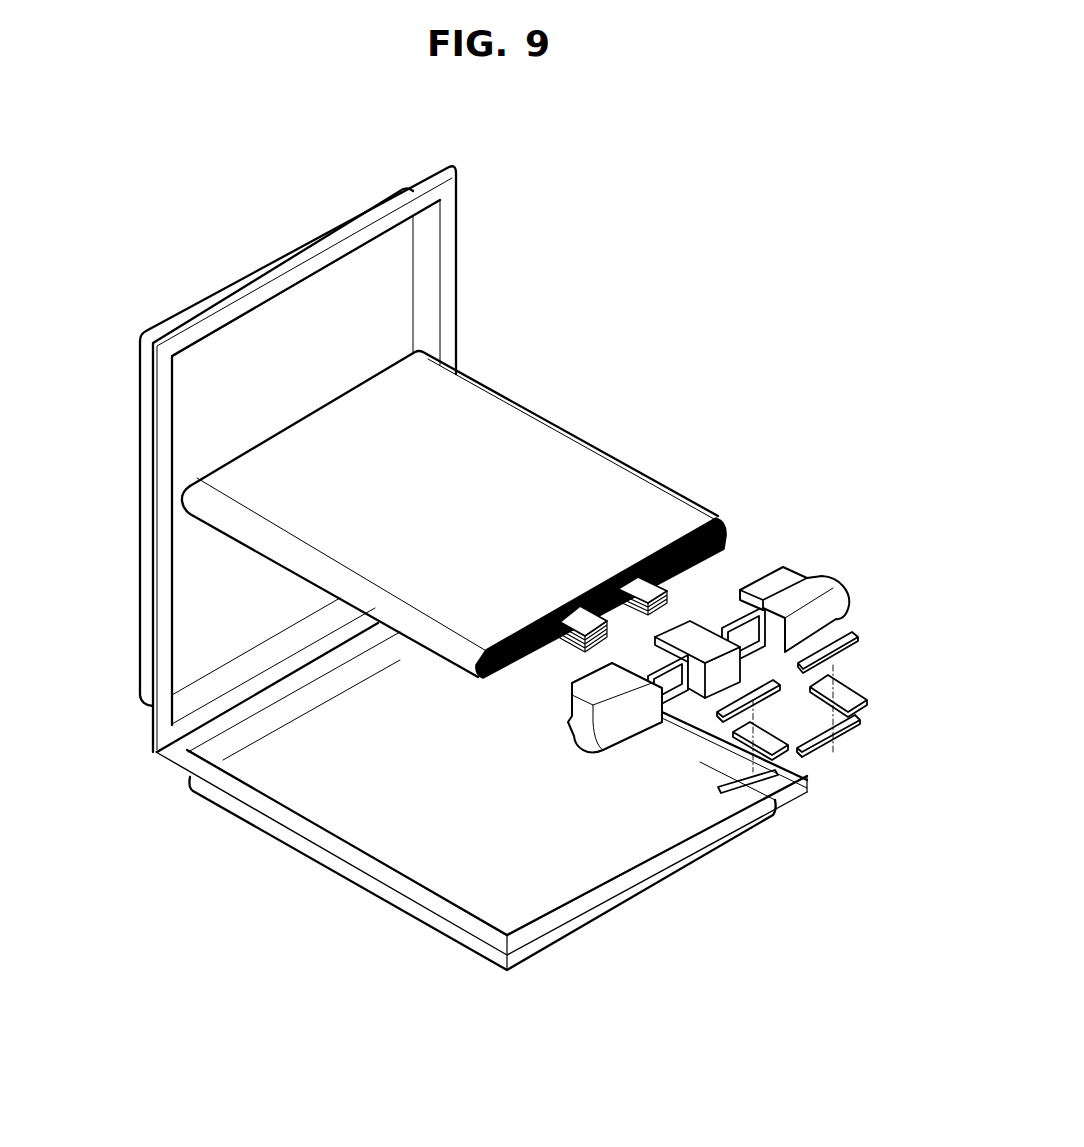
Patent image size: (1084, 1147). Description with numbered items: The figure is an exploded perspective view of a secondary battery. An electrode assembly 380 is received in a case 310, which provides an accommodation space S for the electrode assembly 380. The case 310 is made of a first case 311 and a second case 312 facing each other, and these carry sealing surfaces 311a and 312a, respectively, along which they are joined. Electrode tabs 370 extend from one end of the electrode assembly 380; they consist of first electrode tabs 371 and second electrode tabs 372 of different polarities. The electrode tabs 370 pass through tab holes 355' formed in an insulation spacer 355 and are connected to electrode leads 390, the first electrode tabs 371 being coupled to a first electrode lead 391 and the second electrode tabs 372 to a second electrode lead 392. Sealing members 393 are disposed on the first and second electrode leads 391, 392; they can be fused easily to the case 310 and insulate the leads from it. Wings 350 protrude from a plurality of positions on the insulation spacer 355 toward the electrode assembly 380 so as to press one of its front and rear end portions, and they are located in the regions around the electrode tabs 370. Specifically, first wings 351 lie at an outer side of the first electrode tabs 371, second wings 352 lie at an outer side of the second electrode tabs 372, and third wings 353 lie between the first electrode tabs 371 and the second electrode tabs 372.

The case 310 is at (433, 568).
The first case 311 is at (258, 463).
The sealing surface 311a is at (160, 548).
The second case 312 is at (481, 826).
The sealing surface 312a is at (340, 850).
The wings 350 is at (717, 631).
The first wings 351 is at (770, 578).
The second wings 352 is at (593, 682).
The third wings 353 is at (680, 632).
The insulation spacer 355 is at (790, 628).
The tab holes 355' is at (727, 622).
The electrode tabs 370 is at (587, 565).
The first electrode tabs 371 is at (642, 578).
The second electrode tabs 372 is at (580, 612).
The electrode assembly 380 is at (571, 424).
The electrode leads 390 is at (824, 744).
The first electrode lead 391 is at (848, 702).
The second electrode lead 392 is at (771, 745).
The sealing members 393 is at (857, 640).
The accommodation space S is at (467, 820).